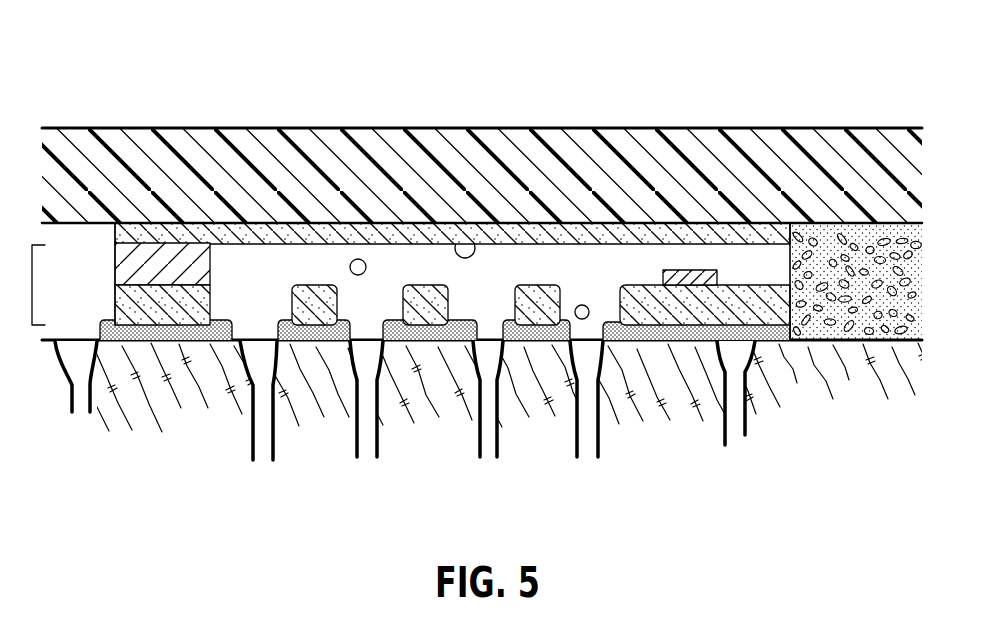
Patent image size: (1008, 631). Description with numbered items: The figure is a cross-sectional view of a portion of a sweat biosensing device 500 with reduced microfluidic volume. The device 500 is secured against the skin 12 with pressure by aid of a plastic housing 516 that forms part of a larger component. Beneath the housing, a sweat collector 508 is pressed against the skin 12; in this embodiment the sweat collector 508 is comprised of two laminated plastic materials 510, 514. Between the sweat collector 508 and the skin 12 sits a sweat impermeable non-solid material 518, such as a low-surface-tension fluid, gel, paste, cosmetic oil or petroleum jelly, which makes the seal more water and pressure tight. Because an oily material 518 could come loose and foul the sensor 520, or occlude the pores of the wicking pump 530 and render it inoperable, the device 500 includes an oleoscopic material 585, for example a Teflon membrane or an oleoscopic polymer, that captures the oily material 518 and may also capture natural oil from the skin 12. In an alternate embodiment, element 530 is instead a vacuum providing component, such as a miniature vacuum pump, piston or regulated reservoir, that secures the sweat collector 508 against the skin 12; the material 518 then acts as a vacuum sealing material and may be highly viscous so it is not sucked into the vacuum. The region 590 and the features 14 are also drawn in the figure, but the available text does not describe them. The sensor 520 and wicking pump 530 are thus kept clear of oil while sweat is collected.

The device 500 is at (107, 62).
The plastic housing 516 is at (160, 135).
The oleoscopic material 585 is at (272, 238).
The sweat impermeable non-solid material 518 is at (363, 260).
The cavity 590 is at (572, 265).
The sensor 520 is at (675, 270).
The laminated plastic material 510 is at (114, 298).
The wicking pump 530 is at (872, 240).
The laminated plastic material 514 is at (114, 262).
The sweat collector 508 is at (32, 287).
The trenches 14 is at (88, 412).
The skin 12 is at (817, 397).